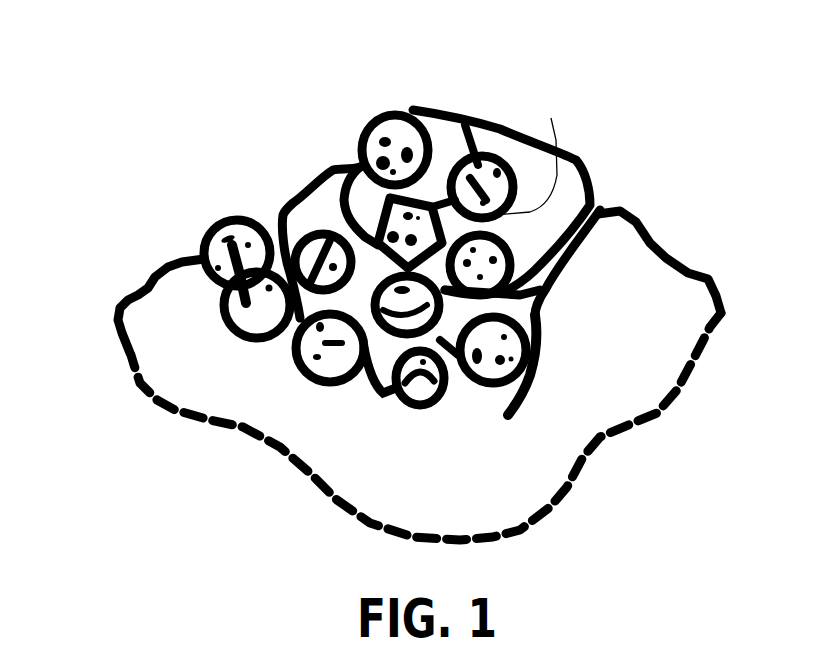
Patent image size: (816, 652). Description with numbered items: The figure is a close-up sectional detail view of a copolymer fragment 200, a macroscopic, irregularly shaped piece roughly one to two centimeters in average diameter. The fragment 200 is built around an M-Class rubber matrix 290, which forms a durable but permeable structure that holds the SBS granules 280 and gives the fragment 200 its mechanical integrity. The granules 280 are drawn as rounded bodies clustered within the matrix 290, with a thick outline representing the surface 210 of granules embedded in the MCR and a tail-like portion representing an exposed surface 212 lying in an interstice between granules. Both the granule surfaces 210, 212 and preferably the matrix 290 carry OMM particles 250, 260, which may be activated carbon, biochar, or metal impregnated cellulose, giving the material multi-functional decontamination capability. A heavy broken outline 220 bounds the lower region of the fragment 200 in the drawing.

The copolymer fragment 200 is at (132, 414).
The surface of SBS granule 210 is at (548, 175).
The exposed surface 212 is at (457, 311).
The outer dashed boundary 220 is at (608, 205).
The OMM particles 250 is at (320, 250).
The OMM particles 260 is at (452, 210).
The SBS granules 280 is at (473, 140).
The MCR matrix 290 is at (515, 250).